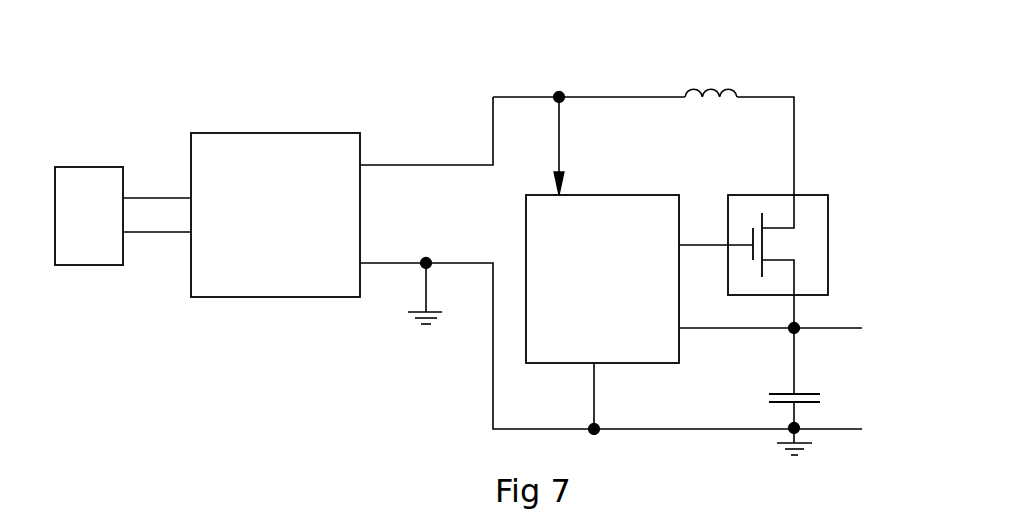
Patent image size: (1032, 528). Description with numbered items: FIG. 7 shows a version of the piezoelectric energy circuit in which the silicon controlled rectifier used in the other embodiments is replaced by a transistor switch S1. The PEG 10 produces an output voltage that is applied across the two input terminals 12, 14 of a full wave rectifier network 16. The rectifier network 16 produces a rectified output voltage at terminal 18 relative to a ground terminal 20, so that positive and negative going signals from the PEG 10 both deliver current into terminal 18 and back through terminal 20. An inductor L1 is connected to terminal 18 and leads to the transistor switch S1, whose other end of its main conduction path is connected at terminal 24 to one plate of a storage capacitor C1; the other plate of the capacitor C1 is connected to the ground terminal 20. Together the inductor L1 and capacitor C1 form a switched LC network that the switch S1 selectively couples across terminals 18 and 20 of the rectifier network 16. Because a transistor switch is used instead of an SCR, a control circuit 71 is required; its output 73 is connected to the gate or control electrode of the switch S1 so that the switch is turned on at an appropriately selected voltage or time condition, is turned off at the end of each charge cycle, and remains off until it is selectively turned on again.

The PEG 10 is at (87, 158).
The terminal 12 is at (140, 198).
The terminal 14 is at (177, 233).
The full wave rectifier network 16 is at (242, 125).
The terminal 18 is at (380, 160).
The ground terminal 20 is at (425, 295).
The terminal 24 is at (798, 326).
The control circuit 71 is at (568, 364).
The output 73 is at (745, 245).
The inductor L1 is at (740, 87).
The transistor switch S1 is at (828, 218).
The storage capacitor C1 is at (813, 386).